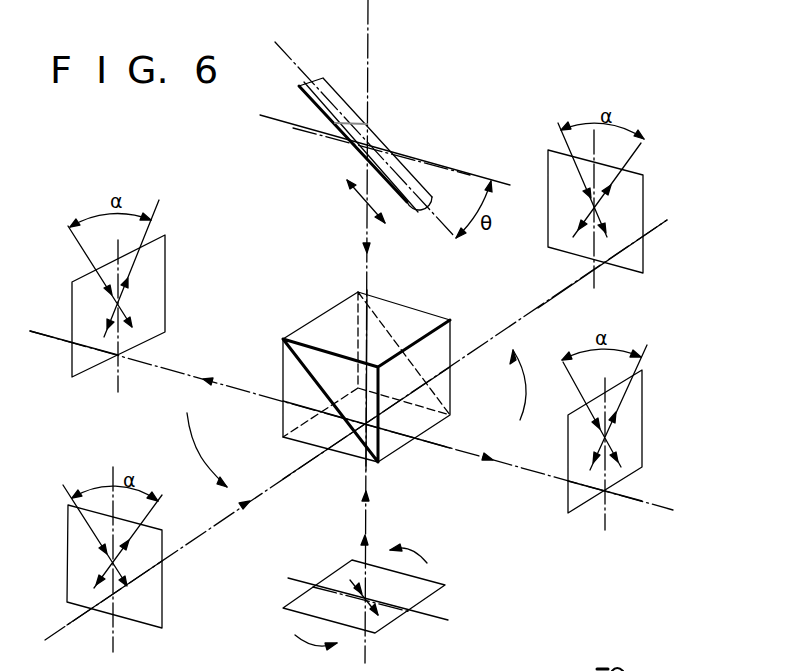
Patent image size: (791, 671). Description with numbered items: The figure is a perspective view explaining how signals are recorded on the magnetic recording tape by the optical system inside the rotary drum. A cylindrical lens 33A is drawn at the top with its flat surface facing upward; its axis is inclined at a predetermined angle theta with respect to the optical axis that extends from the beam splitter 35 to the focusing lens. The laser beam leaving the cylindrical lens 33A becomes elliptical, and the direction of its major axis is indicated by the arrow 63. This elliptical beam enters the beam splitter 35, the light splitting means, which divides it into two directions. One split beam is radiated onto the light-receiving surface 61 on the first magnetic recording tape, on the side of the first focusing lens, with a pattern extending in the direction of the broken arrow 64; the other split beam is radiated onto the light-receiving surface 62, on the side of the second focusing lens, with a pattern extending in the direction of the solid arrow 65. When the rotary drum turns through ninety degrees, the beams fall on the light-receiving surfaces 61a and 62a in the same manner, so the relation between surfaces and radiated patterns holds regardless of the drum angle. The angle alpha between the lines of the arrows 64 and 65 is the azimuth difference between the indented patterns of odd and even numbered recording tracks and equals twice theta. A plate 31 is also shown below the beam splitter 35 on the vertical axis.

The polarizer plate 31 is at (348, 628).
The cylindrical lens 33A is at (340, 84).
The beam splitter 35 is at (423, 312).
The light-receiving surface 61 is at (167, 279).
The light-receiving surface 61a is at (123, 618).
The light-receiving surface 62 is at (643, 410).
The light-receiving surface 62a is at (647, 193).
The arrow 63 is at (364, 203).
The broken arrow 64 is at (122, 304).
The solid arrow 65 is at (598, 212).